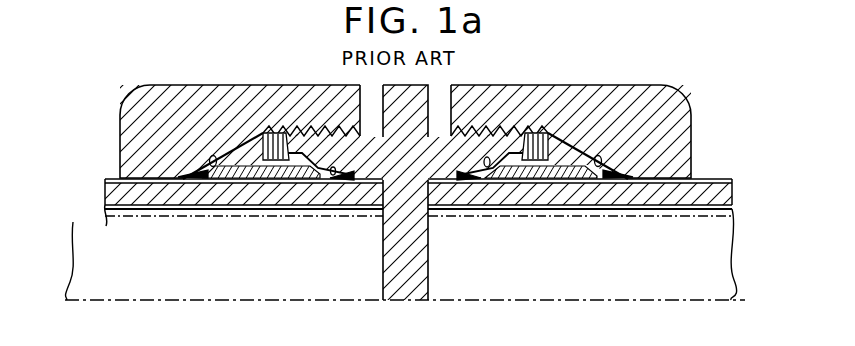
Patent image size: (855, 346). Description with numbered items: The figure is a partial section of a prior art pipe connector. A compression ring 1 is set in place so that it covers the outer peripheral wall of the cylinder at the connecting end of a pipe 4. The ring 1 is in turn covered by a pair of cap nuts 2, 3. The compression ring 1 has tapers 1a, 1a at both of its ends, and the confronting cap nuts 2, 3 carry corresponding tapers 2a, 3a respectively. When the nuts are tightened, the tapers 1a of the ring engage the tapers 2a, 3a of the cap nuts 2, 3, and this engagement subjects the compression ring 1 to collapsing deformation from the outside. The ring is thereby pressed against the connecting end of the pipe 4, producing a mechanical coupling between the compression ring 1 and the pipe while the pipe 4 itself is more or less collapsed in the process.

The compression ring 1 is at (303, 183).
The taper 1a is at (217, 163).
The cap nut 2 is at (400, 168).
The taper 2a is at (335, 175).
The cap nut 3 is at (236, 94).
The taper 3a is at (200, 176).
The pipe 4 is at (106, 210).